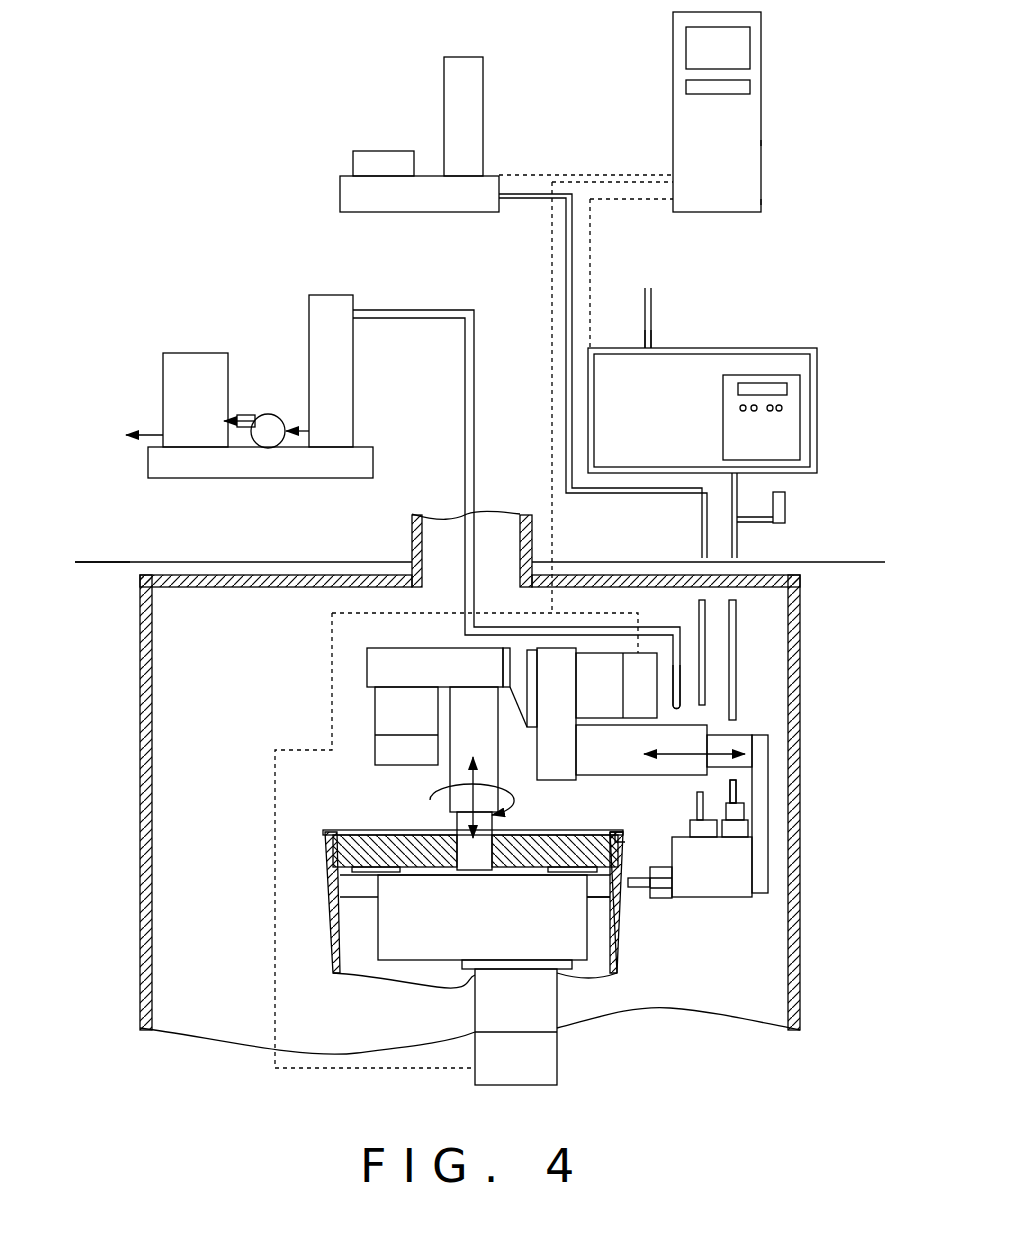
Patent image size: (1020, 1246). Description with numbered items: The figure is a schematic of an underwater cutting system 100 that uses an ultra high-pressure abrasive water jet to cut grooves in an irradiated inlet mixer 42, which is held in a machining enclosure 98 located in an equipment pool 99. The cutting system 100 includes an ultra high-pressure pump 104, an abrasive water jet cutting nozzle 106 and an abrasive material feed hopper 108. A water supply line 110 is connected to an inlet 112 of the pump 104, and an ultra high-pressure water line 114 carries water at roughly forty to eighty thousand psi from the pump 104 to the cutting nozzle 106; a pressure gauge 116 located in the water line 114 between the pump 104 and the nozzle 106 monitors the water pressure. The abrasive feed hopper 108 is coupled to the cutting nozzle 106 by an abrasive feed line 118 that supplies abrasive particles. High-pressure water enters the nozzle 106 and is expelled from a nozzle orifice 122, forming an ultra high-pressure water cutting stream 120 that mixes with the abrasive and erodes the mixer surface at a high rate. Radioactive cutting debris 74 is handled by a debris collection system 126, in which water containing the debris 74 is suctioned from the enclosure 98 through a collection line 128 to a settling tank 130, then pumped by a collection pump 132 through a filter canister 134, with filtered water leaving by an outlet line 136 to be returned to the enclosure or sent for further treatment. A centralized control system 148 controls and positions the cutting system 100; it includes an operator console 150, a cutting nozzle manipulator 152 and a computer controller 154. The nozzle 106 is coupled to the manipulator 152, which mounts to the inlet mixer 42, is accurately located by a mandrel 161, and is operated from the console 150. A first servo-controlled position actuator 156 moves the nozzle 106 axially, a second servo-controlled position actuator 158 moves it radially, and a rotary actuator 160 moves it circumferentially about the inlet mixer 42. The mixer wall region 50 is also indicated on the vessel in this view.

The irradiated inlet mixer 42 is at (332, 975).
The vessel wall 50 is at (620, 903).
The cutting debris 74 is at (680, 692).
The machining enclosure 98 is at (358, 562).
The equipment pool 99 is at (102, 581).
The underwater cutting system 100 is at (780, 330).
The ultra high-pressure pump 104 is at (817, 428).
The abrasive water jet cutting nozzle 106 is at (735, 902).
The abrasive material feed hopper 108 is at (440, 90).
The water supply line 110 is at (651, 289).
The inlet 112 is at (660, 343).
The ultra high-pressure water line 114 is at (737, 545).
The pressure gauge 116 is at (785, 503).
The abrasive feed line 118 is at (702, 544).
The ultra high-pressure water cutting stream 120 is at (632, 870).
The nozzle orifice 122 is at (640, 880).
The debris collection system 126 is at (215, 290).
The collection line 128 is at (474, 343).
The settling tank 130 is at (328, 295).
The collection pump 132 is at (250, 413).
The filter canister 134 is at (160, 360).
The outlet line 136 is at (152, 430).
The centralized control system 148 is at (780, 68).
The operator console 150 is at (761, 143).
The cutting nozzle manipulator 152 is at (765, 702).
The computer controller 154 is at (761, 202).
The first servo-controlled position actuator 156 is at (400, 647).
The second servo-controlled position actuator 158 is at (553, 650).
The rotary actuator 160 is at (562, 1057).
The mandrel 161 is at (362, 832).